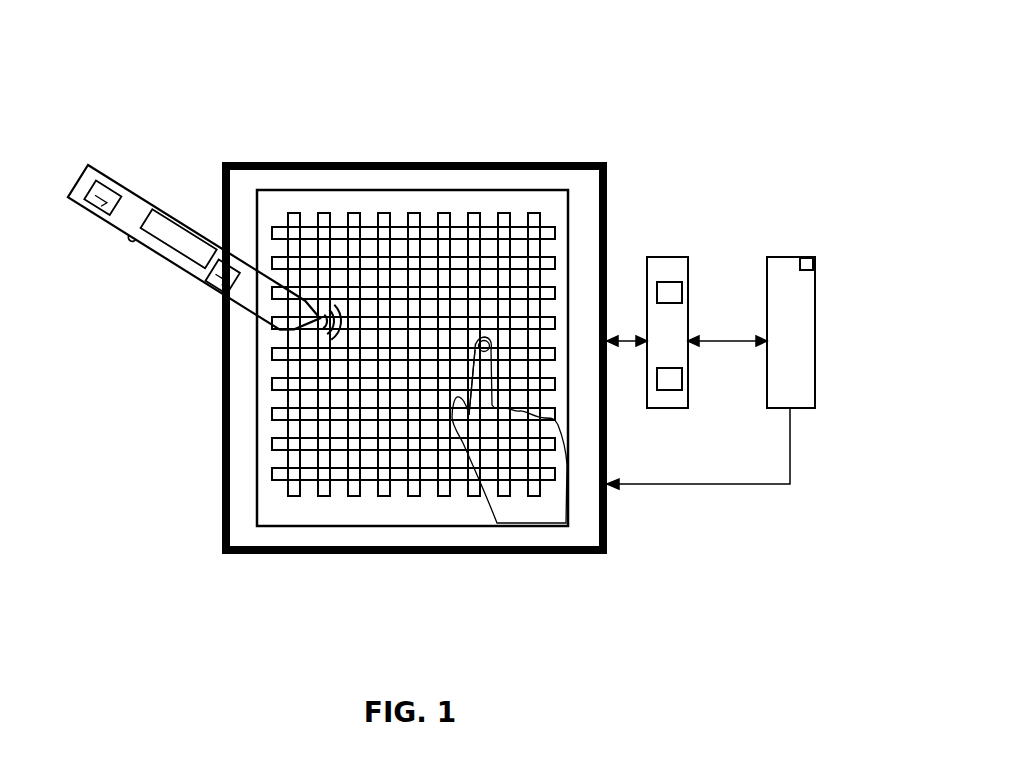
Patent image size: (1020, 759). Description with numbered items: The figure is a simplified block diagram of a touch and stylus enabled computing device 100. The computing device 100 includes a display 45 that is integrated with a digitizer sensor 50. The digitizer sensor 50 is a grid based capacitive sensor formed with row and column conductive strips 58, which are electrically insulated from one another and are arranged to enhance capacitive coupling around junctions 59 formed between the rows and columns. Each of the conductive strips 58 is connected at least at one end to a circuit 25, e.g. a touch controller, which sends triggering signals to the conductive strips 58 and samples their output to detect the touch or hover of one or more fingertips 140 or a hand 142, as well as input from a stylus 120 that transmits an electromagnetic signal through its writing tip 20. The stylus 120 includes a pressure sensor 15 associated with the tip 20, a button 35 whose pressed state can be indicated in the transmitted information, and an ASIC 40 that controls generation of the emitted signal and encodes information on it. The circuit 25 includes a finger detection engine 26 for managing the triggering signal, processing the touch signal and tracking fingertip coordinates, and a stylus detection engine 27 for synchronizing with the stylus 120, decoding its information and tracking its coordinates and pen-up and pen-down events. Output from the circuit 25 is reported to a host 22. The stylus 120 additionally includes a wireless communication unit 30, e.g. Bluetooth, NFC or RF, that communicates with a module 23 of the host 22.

The computing device 100 is at (407, 77).
The display 45 is at (532, 163).
The digitizer sensor 50 is at (572, 238).
The writing tip 20 is at (288, 340).
The conductive strips 58 is at (467, 215).
The junctions 59 is at (383, 440).
The stylus 120 is at (197, 230).
The wireless communication unit 30 is at (100, 206).
The button 35 is at (128, 243).
The ASIC 40 is at (165, 253).
The pressure sensor 15 is at (220, 282).
The fingertip 140 is at (478, 348).
The hand 142 is at (511, 472).
The circuit 25 is at (667, 257).
The finger detection engine 26 is at (684, 297).
The stylus detection engine 27 is at (684, 382).
The host 22 is at (790, 257).
The module 23 is at (812, 268).